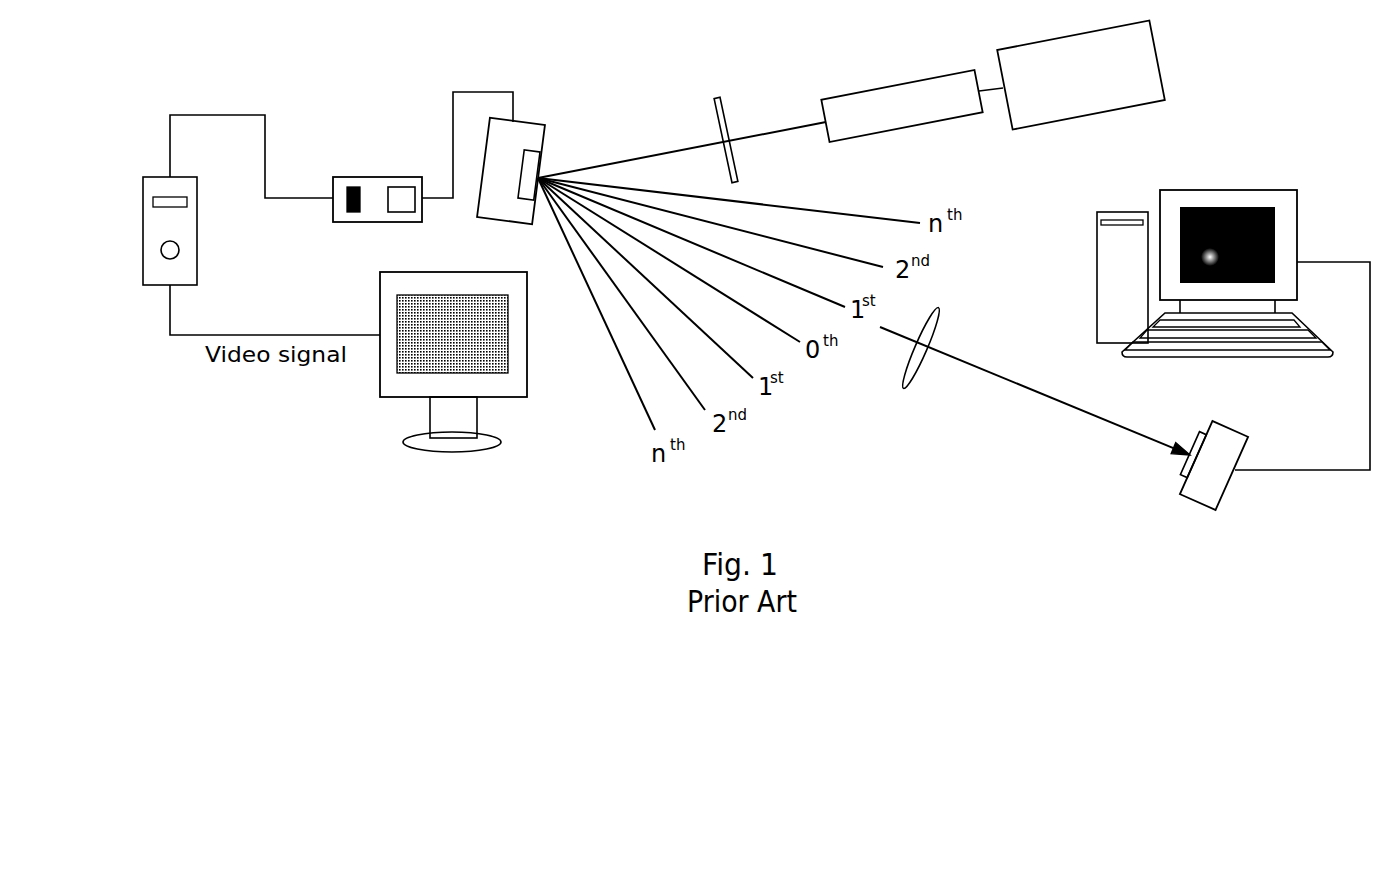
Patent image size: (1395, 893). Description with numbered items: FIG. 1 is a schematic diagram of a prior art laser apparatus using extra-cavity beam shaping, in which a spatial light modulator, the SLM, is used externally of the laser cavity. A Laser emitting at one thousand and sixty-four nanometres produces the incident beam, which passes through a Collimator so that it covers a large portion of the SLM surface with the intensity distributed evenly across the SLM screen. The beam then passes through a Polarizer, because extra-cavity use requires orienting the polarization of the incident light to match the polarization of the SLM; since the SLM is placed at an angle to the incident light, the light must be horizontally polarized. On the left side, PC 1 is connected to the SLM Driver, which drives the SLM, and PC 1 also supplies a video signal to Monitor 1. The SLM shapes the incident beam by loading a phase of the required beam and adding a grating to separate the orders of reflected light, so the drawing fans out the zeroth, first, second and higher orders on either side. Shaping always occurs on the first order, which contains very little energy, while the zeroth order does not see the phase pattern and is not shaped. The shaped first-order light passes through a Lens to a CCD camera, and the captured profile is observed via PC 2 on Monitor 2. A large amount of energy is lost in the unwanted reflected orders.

The element PC 1 is at (198, 231).
The SLM driver SLM Driver is at (377, 169).
The spatial light modulator SLM is at (511, 191).
The element Monitor 1 is at (453, 383).
The polarizer Polarizer is at (709, 121).
The collimator Collimator is at (912, 94).
The laser Laser is at (1081, 74).
The lens Lens is at (908, 367).
The element PC 2 is at (1122, 265).
The element Monitor 2 is at (1227, 257).
The CCD camera CCD is at (1210, 464).